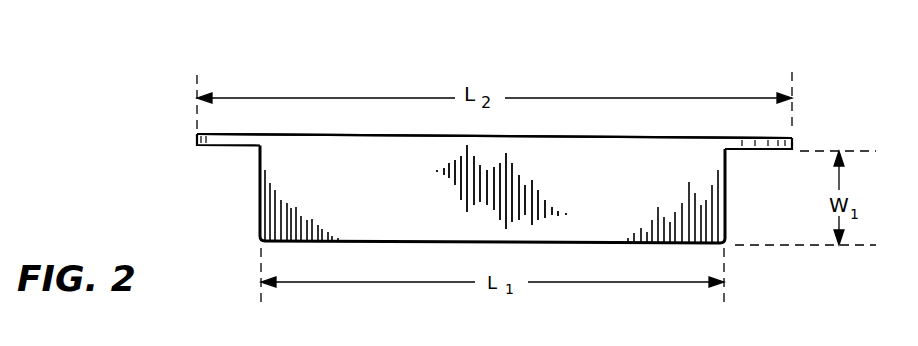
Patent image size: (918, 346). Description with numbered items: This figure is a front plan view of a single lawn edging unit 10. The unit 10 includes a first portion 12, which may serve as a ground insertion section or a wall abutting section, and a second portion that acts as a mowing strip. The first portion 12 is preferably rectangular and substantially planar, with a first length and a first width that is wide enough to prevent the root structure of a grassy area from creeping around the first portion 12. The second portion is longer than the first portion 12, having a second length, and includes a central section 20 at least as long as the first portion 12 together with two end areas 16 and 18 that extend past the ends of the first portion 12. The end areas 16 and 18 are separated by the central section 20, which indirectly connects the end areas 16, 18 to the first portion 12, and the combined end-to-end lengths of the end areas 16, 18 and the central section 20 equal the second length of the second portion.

The lawn edging unit 10 is at (603, 83).
The first portion 12 is at (397, 222).
The end area 16 is at (230, 147).
The end area 18 is at (738, 150).
The central section 20 is at (416, 134).